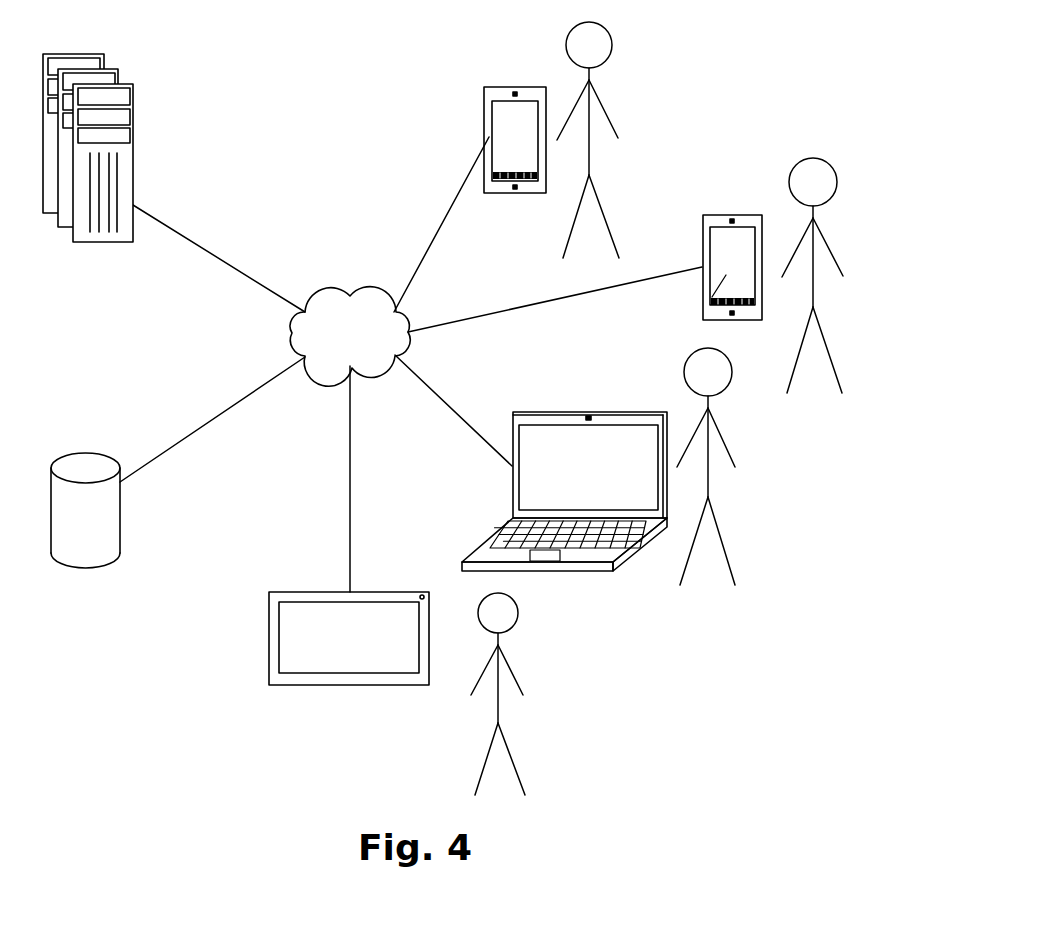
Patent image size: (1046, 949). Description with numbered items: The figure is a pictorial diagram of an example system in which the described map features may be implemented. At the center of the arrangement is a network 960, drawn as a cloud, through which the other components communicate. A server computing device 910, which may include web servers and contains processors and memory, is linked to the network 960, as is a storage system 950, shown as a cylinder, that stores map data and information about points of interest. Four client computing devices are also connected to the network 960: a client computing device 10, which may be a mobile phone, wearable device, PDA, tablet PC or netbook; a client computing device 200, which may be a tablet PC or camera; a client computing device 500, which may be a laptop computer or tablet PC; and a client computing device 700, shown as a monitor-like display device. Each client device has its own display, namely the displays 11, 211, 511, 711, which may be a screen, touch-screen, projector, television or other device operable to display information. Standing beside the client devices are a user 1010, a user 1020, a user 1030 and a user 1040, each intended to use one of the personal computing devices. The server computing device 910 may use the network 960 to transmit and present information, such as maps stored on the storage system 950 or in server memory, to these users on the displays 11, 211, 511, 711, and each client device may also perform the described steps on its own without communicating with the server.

The client computing device 10 is at (486, 112).
The display 11 is at (491, 136).
The client computing device 200 is at (732, 215).
The display 211 is at (706, 303).
The client computing device 500 is at (513, 466).
The display 511 is at (519, 498).
The client computing device 700 is at (269, 627).
The display 711 is at (298, 647).
The server computing device 910 is at (135, 118).
The storage system 950 is at (120, 528).
The network 960 is at (350, 337).
The user 1010 is at (614, 130).
The user 1020 is at (840, 268).
The user 1030 is at (733, 458).
The user 1040 is at (521, 683).